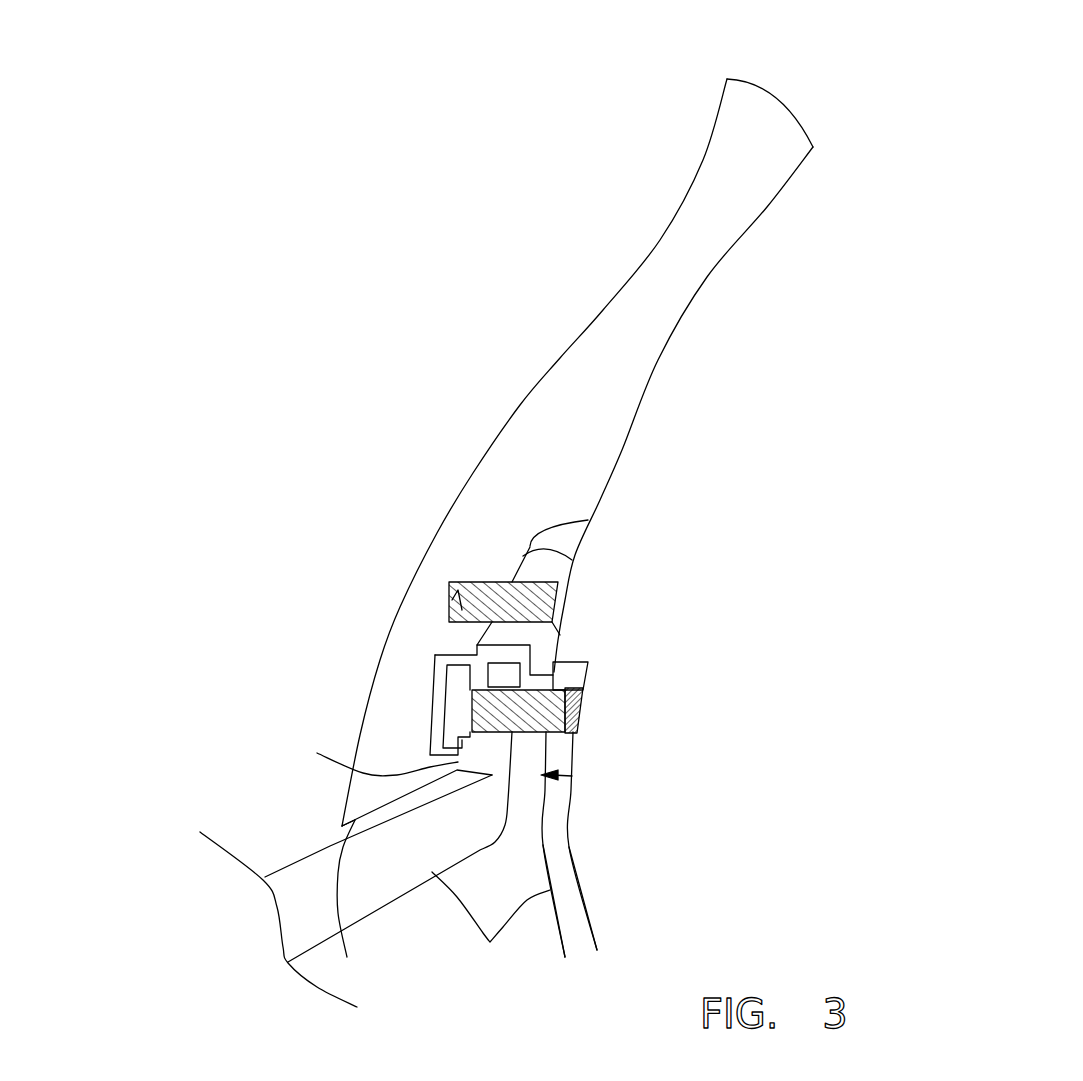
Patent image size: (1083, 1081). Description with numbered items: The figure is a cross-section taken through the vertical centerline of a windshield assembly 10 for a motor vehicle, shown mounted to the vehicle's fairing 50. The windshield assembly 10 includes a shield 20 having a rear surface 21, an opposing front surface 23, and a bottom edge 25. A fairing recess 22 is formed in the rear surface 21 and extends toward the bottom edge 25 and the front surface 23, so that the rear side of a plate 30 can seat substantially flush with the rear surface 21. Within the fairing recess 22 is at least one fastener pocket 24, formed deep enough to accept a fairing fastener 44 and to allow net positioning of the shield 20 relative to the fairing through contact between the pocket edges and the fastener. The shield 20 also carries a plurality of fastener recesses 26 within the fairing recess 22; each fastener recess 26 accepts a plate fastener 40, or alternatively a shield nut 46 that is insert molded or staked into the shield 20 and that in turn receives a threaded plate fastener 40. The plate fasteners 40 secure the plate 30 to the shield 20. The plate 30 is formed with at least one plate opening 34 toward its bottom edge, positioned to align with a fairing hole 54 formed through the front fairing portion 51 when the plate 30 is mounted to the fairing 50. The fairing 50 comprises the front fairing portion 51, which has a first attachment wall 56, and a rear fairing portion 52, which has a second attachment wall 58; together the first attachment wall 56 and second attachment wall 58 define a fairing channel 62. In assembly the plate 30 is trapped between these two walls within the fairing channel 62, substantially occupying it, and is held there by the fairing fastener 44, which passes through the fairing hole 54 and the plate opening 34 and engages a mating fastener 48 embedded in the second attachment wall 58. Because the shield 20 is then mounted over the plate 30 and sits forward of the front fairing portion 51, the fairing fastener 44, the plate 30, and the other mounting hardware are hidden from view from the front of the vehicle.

The windshield assembly 10 is at (405, 210).
The shield 20 is at (753, 80).
The rear surface 21 is at (767, 207).
The fairing recess 22 is at (562, 545).
The front surface 23 is at (703, 160).
The fastener pocket 24 is at (440, 652).
The bottom edge 25 is at (350, 905).
The fastener recess 26 is at (480, 580).
The plate 30 is at (567, 567).
The plate opening 34 is at (547, 660).
The plate fastener 40 is at (567, 597).
The fairing fastener 44 is at (585, 665).
The shield nut 46 is at (460, 580).
The mating fastener 48 is at (583, 710).
The fairing 50 is at (419, 856).
The front fairing portion 51 is at (285, 866).
The rear fairing portion 52 is at (570, 808).
The fairing hole 54 is at (365, 752).
The first attachment wall 56 is at (417, 795).
The second attachment wall 58 is at (575, 757).
The fairing channel 62 is at (570, 777).